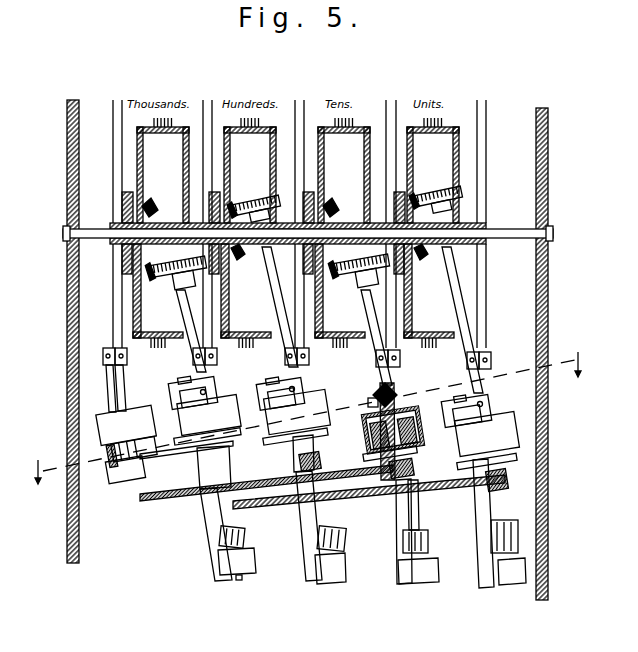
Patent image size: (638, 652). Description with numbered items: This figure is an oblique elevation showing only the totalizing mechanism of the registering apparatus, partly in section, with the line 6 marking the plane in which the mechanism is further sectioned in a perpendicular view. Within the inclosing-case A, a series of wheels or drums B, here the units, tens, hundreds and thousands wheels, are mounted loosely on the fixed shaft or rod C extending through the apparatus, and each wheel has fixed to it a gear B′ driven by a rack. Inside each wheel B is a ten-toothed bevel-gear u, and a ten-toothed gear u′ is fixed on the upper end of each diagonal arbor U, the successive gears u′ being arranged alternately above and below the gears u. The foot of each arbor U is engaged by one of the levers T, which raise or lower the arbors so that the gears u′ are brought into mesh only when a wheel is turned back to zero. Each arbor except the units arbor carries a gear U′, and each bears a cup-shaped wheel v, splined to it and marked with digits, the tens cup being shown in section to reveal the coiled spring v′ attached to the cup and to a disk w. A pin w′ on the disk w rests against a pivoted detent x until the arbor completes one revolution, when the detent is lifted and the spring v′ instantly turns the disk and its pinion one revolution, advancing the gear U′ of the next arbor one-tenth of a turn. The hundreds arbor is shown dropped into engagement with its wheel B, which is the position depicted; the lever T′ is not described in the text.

The inclosing-case A is at (291, 350).
The wheel or drum B is at (296, 233).
The gear B′ is at (124, 193).
The fixed shaft or rod C is at (98, 240).
The bevel-gear u is at (287, 234).
The gear u′ is at (257, 198).
The diagonal arbor U is at (184, 312).
The gear U′ is at (322, 492).
The detent or small lever x is at (368, 402).
The cup-shaped wheel or drum v is at (310, 422).
The coiled spring v′ is at (364, 431).
The disk w is at (236, 437).
The pin w′ is at (305, 433).
The lever T is at (438, 536).
The pinion T′ is at (244, 540).
The section line 6- 6 is at (306, 417).